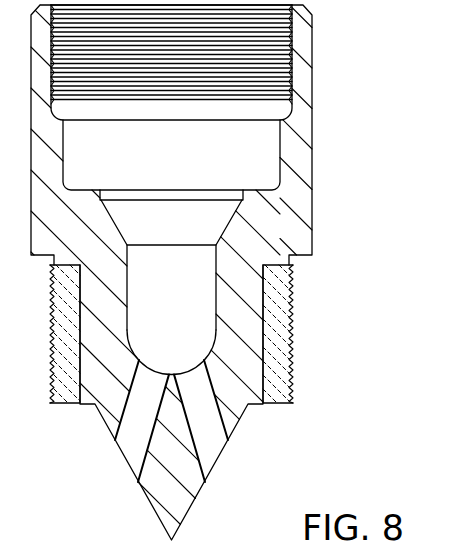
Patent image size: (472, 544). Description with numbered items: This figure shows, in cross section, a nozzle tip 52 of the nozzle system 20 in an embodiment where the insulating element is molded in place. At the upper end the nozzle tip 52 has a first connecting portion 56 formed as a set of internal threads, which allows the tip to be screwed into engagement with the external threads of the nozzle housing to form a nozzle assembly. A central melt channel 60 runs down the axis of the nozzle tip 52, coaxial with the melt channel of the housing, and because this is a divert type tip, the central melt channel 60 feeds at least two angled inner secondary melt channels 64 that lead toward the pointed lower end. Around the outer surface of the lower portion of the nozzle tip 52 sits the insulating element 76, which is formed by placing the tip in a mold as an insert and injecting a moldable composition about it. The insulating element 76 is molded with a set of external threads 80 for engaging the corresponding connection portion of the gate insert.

The nozzle system 20 is at (205, 274).
The nozzle tip 52 is at (389, 134).
The first connecting portion 56 is at (294, 60).
The central melt channel 60 is at (192, 239).
The angled inner secondary melt channels 64 is at (153, 424).
The insulating element 76 is at (374, 303).
The external threads 80 is at (374, 357).